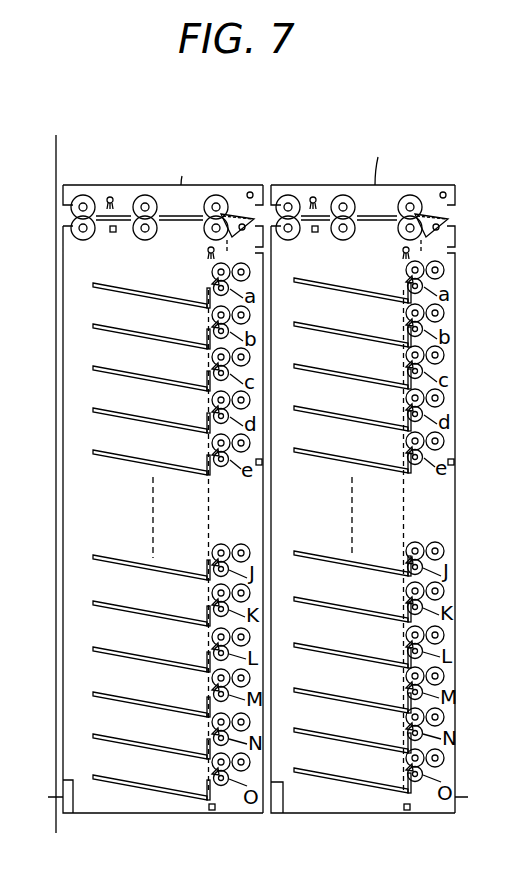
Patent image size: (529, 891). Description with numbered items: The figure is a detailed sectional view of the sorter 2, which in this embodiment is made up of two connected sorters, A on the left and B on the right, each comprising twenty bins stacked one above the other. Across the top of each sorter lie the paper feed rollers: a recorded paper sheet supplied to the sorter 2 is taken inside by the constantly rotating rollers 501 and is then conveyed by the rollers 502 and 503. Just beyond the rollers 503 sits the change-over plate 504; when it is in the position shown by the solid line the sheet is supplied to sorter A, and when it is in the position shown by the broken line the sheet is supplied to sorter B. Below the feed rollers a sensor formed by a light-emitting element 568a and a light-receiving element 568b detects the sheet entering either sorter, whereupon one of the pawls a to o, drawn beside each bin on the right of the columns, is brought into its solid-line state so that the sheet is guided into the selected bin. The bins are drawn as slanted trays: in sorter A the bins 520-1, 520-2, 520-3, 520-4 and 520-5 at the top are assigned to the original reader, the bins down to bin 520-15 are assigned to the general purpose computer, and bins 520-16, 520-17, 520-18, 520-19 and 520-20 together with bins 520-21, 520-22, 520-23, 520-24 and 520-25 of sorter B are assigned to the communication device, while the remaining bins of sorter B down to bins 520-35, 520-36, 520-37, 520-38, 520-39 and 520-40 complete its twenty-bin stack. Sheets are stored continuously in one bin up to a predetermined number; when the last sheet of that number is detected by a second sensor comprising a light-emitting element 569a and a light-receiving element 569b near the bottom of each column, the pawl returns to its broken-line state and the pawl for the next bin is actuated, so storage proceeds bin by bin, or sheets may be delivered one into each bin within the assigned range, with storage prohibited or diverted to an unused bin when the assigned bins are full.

The sorter 2 is at (229, 142).
The rollers 501 is at (72, 200).
The rollers 502 is at (145, 195).
The rollers 503 is at (204, 207).
The change-over plate 504 is at (229, 213).
The light-emitting element 568a is at (109, 197).
The light-receiving element 568b is at (113, 233).
The light-emitting element 569a is at (207, 250).
The light-receiving element 569b is at (211, 812).
The bin 520-1 is at (104, 288).
The bin 520-2 is at (104, 329).
The bin 520-3 is at (104, 371).
The bin 520-4 is at (104, 413).
The bin 520-5 is at (104, 455).
The bin 520-15 is at (104, 560).
The bin 520-16 is at (104, 606).
The bin 520-17 is at (104, 652).
The bin 520-18 is at (104, 697).
The bin 520-19 is at (104, 739).
The bin 520-20 is at (104, 780).
The bin 520-21 is at (305, 283).
The bin 520-22 is at (305, 327).
The bin 520-23 is at (305, 369).
The bin 520-24 is at (305, 411).
The bin 520-25 is at (305, 453).
The bin 520-35 is at (305, 556).
The bin 520-36 is at (305, 602).
The bin 520-37 is at (305, 648).
The bin 520-38 is at (305, 693).
The bin 520-39 is at (305, 733).
The bin 520-40 is at (305, 773).